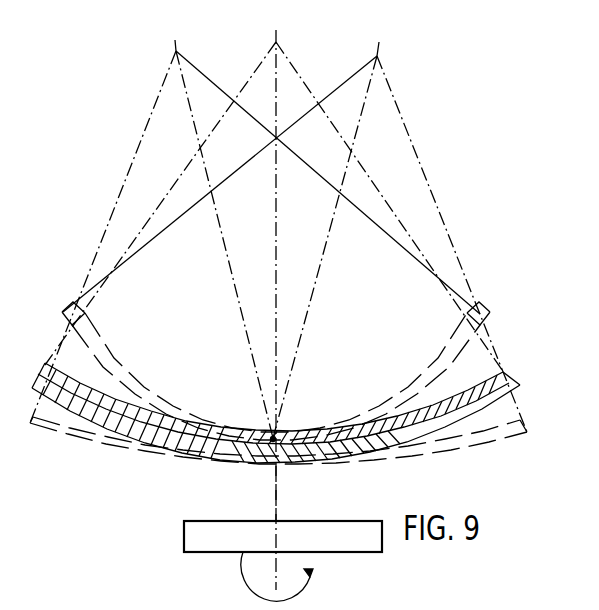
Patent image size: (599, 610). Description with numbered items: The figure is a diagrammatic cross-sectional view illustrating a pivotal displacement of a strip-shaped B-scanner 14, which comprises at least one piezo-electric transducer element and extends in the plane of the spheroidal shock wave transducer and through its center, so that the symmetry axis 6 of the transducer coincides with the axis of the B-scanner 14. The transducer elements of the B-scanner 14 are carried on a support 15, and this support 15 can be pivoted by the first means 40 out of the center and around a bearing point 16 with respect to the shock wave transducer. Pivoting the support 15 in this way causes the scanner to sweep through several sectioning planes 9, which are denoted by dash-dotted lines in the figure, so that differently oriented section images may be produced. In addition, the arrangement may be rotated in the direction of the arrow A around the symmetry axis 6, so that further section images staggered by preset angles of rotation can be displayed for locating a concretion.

The sectioning plane 9 is at (289, 42).
The B-scanner 14 is at (478, 377).
The support 15 is at (102, 421).
The bearing point 16 is at (272, 441).
The symmetry axis 6 is at (279, 489).
The first means 40 is at (283, 536).
The arrow A is at (313, 580).